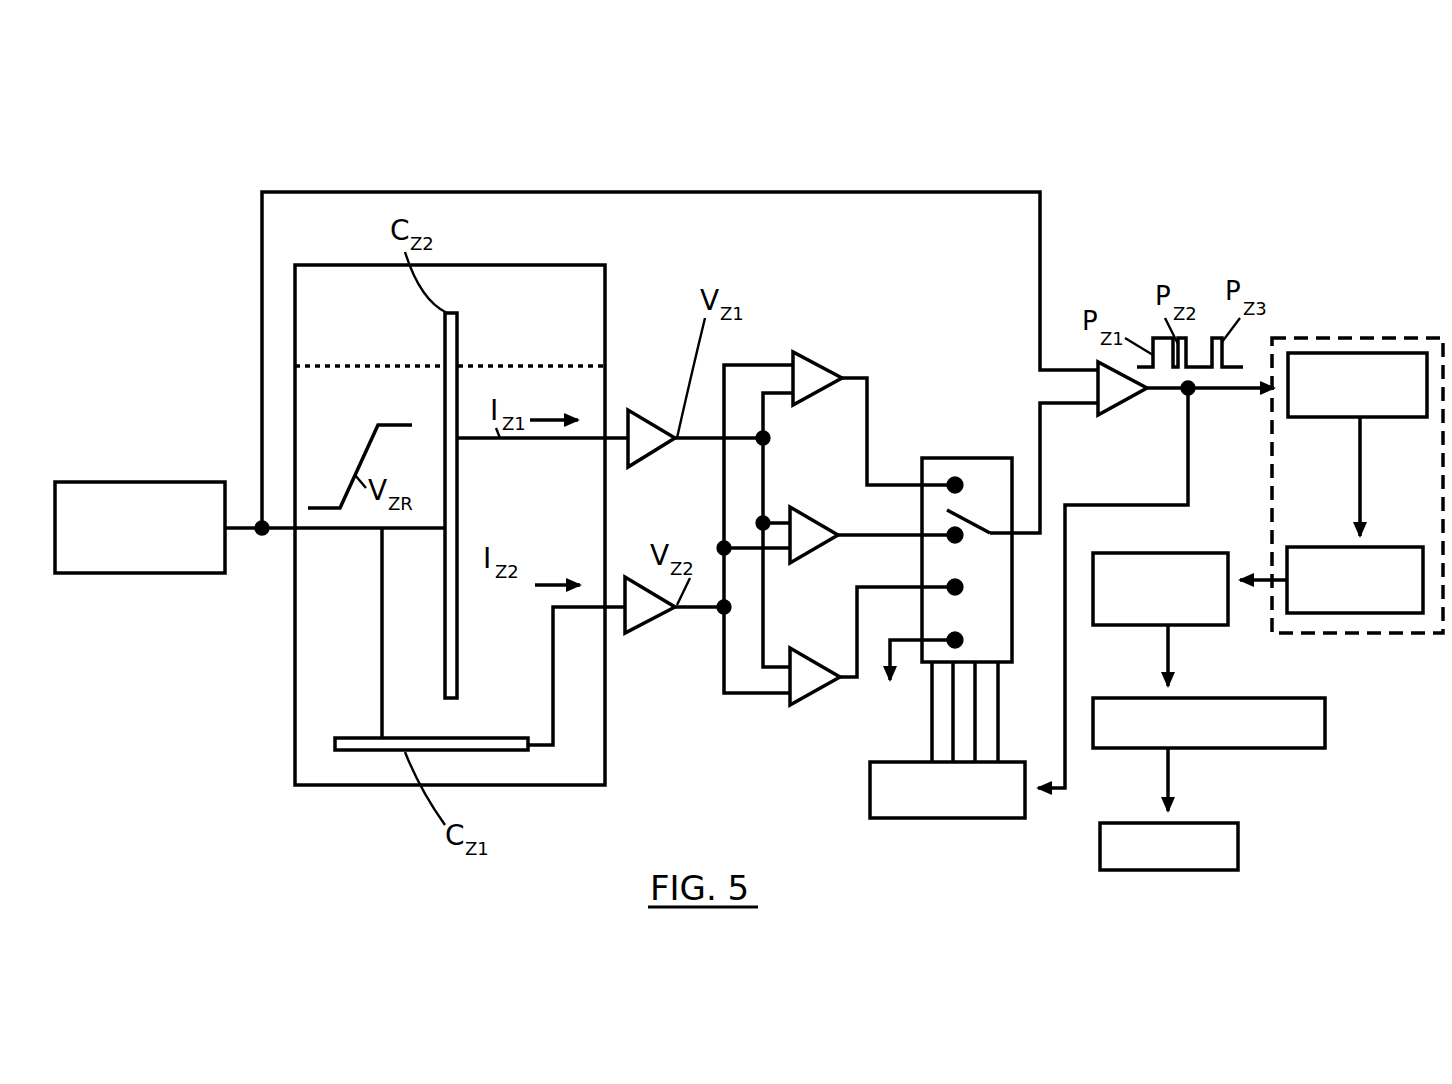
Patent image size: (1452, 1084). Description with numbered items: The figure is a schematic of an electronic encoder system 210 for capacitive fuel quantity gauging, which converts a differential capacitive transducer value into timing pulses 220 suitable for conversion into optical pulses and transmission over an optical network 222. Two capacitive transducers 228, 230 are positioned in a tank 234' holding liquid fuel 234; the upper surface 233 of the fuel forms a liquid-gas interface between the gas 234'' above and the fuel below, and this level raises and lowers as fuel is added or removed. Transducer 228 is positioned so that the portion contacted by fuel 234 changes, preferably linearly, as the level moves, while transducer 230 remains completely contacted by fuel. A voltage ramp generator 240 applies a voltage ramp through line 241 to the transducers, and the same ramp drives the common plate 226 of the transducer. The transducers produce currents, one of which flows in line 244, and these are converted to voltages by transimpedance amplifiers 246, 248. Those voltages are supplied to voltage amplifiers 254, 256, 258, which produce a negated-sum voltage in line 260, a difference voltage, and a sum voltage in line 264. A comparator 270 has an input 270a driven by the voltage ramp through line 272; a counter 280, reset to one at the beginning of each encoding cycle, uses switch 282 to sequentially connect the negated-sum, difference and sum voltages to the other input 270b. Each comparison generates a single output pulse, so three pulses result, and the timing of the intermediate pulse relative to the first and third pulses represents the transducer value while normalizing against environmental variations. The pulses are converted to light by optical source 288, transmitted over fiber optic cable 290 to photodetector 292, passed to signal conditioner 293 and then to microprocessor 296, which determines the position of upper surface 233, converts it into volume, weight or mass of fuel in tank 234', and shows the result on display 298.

The electronic encoder system 210 is at (1122, 218).
The timing pulses 220 is at (1203, 372).
The optical network 222 is at (1335, 338).
The common plate 226 is at (445, 400).
The capacitive transducer 228 is at (460, 320).
The capacitive transducer 230 is at (445, 737).
The upper surface 233 is at (405, 366).
The liquid fuel 234 is at (450, 525).
The tank 234' is at (580, 817).
The gas 234'' is at (347, 291).
The voltage ramp generator 240 is at (113, 482).
The line 241 is at (252, 525).
The line 244 is at (555, 608).
The transimpedance amplifier 246 is at (650, 422).
The transimpedance amplifier 248 is at (672, 617).
The voltage amplifier 254 is at (800, 352).
The voltage amplifier 256 is at (838, 540).
The voltage amplifier 258 is at (818, 700).
The line 260 is at (870, 400).
The line 264 is at (855, 655).
The comparator 270 is at (1120, 408).
The comparator input 270a is at (1100, 370).
The comparator input 270b is at (1100, 405).
The line 272 is at (640, 192).
The counter 280 is at (870, 810).
The switch 282 is at (932, 458).
The optical source 288 is at (1350, 420).
The fiber optic cable 290 is at (1362, 500).
The photodetector 292 is at (1340, 615).
The signal conditioner 293 is at (1150, 553).
The microprocessor 296 is at (1305, 750).
The display 298 is at (1240, 840).